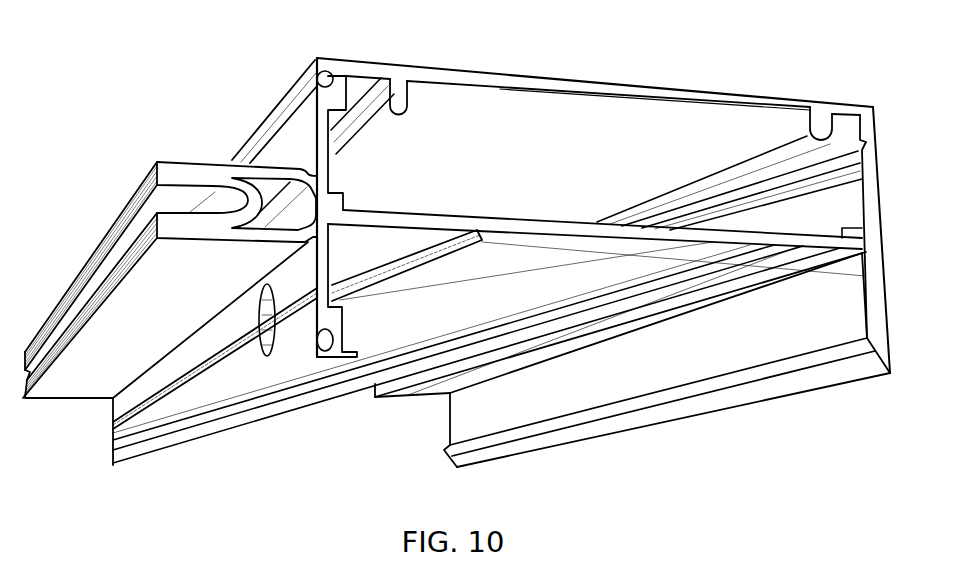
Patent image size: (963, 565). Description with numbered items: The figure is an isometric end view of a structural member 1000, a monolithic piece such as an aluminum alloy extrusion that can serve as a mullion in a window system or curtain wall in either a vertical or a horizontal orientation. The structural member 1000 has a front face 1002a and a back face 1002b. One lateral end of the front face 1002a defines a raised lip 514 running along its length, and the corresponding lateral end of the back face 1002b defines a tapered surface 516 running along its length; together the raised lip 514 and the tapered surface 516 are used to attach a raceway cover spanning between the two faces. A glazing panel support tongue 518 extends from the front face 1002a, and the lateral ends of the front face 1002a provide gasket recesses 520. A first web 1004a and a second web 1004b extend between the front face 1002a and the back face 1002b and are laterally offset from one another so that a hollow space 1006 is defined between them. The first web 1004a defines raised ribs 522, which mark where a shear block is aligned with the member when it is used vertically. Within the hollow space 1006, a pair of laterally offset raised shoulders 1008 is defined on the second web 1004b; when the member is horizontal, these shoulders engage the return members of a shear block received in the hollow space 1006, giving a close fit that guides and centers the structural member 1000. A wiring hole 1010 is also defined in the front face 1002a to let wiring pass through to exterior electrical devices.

The structural member 1000 is at (158, 44).
The front face 1002a is at (182, 398).
The back face 1002b is at (838, 395).
The first web 1004a is at (487, 312).
The second web 1004b is at (619, 82).
The hollow space 1006 is at (733, 125).
The raised shoulders 1008 is at (400, 97).
The raised lip 514 is at (350, 358).
The tapered surface 516 is at (663, 418).
The glazing panel support tongue 518 is at (75, 388).
The gasket recesses 520 is at (292, 97).
The raised ribs 522 is at (404, 338).
The wiring hole 1010 is at (262, 346).